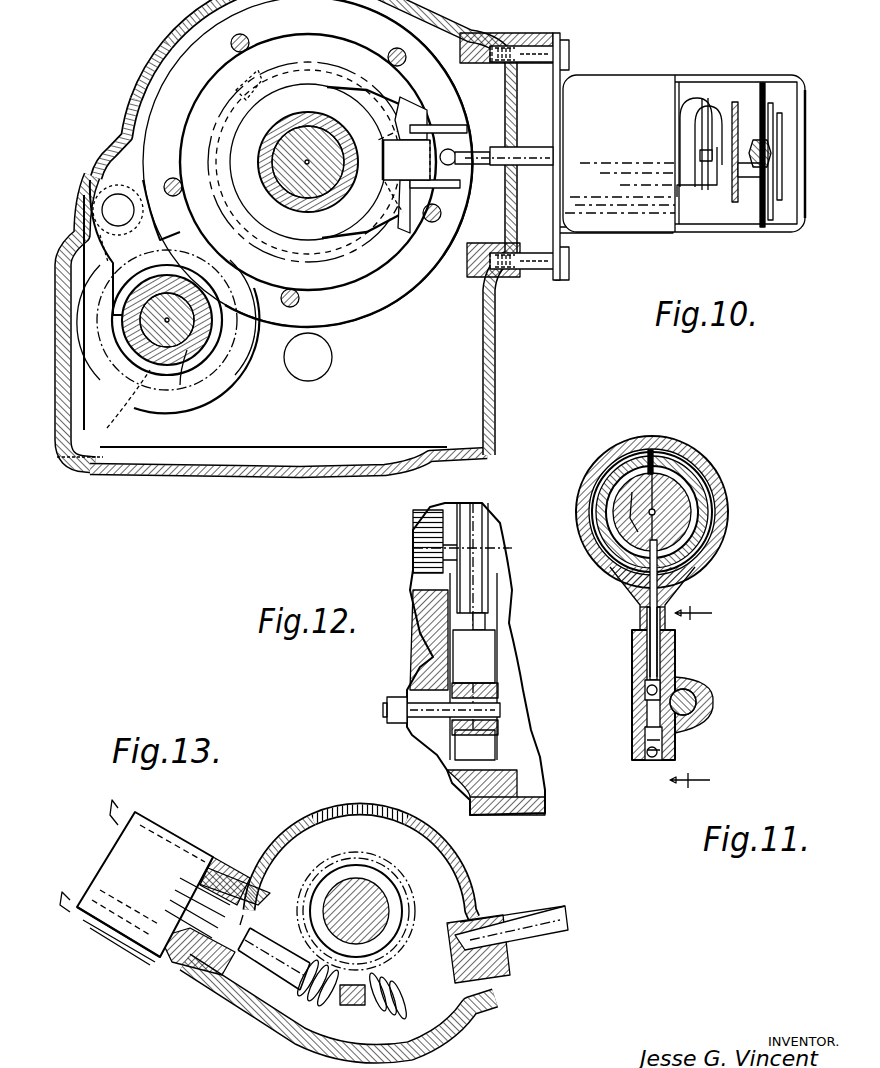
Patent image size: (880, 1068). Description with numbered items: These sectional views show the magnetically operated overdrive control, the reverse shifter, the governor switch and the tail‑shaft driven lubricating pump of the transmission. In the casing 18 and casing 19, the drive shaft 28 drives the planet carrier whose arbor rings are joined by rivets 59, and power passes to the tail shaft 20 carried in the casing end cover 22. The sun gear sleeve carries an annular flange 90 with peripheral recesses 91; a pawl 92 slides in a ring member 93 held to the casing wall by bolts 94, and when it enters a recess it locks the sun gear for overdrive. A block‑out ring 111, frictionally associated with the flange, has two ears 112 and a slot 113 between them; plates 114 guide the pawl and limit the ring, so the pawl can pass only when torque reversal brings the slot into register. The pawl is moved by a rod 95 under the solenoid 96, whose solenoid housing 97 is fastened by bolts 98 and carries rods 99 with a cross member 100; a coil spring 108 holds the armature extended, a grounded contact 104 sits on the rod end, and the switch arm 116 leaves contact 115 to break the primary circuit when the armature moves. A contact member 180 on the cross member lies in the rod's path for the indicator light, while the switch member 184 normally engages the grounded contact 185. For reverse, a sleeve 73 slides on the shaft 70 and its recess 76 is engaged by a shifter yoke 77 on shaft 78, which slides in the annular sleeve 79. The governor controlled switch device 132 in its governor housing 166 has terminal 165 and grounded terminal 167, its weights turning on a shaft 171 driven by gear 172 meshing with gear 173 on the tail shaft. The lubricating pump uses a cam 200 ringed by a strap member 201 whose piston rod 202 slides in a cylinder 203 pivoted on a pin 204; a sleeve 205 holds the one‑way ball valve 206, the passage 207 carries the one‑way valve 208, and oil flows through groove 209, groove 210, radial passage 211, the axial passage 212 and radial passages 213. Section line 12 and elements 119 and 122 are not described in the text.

In FIG. 10, the casing 18 is at (492, 320).
In FIG. 10, the casing 19 is at (140, 74).
In FIG. 12, the tail shaft 20 is at (495, 530).
In FIG. 11, the tail shaft 20 is at (688, 517).
In FIG. 13, the tail shaft 20 is at (350, 890).
In FIG. 12, the casing end cover 22 is at (410, 645).
In FIG. 13, the casing end cover 22 is at (448, 862).
In FIG. 10, the drive shaft 28 is at (302, 126).
In FIG. 10, the rivets 59 is at (312, 112).
In FIG. 10, the shaft 70 is at (184, 395).
In FIG. 10, the sleeve 73 is at (190, 338).
In FIG. 10, the recess 76 is at (150, 385).
In FIG. 10, the shifter yoke 77 is at (57, 255).
In FIG. 10, the shaft 78 is at (86, 192).
In FIG. 10, the annular sleeve 79 is at (118, 194).
In FIG. 10, the annular flange 90 is at (330, 260).
In FIG. 10, the peripheral recesses 91 is at (412, 118).
In FIG. 10, the pawl 92 is at (395, 162).
In FIG. 10, the ring member 93 is at (428, 278).
In FIG. 10, the bolts 94 is at (297, 302).
In FIG. 10, the rod 95 is at (483, 165).
In FIG. 10, the solenoid 96 is at (608, 238).
In FIG. 10, the solenoid housing 97 is at (645, 236).
In FIG. 10, the bolts 98 is at (545, 32).
In FIG. 10, the rods 99 is at (725, 78).
In FIG. 10, the cross member 100 is at (768, 80).
In FIG. 10, the contact 104 is at (755, 135).
In FIG. 10, the coil spring 108 is at (704, 118).
In FIG. 10, the block-out ring 111 is at (330, 72).
In FIG. 10, the ears 112 is at (412, 104).
In FIG. 10, the slot 113 is at (398, 192).
In FIG. 10, the plates 114 is at (462, 134).
In FIG. 10, the contact 115 is at (717, 187).
In FIG. 10, the switch arm 116 is at (700, 154).
In FIG. 10, the arm 119 is at (448, 188).
In FIG. 13, the housing wall 122 is at (282, 838).
In FIG. 13, the governor controlled switch device 132 is at (190, 838).
In FIG. 13, the terminal 165 is at (112, 818).
In FIG. 13, the governor housing 166 is at (130, 940).
In FIG. 13, the grounded terminal 167 is at (70, 895).
In FIG. 13, the shaft 171 is at (268, 940).
In FIG. 13, the gear 172 is at (295, 990).
In FIG. 12, the gear 173 is at (418, 540).
In FIG. 13, the gear 173 is at (408, 905).
In FIG. 10, the contact member 180 is at (778, 170).
In FIG. 10, the switch member 184 is at (780, 132).
In FIG. 10, the contact 185 is at (766, 120).
In FIG. 11, the cam 200 is at (708, 527).
In FIG. 12, the strap member 201 is at (488, 578).
In FIG. 11, the strap member 201 is at (724, 548).
In FIG. 12, the piston rod 202 is at (486, 620).
In FIG. 11, the piston rod 202 is at (632, 620).
In FIG. 12, the cylinder 203 is at (496, 658).
In FIG. 11, the cylinder 203 is at (676, 663).
In FIG. 12, the pin 204 is at (418, 727).
In FIG. 11, the pin 204 is at (700, 690).
In FIG. 11, the sleeve 205 is at (646, 742).
In FIG. 11, the one-way ball valve 206 is at (663, 744).
In FIG. 11, the passage 207 is at (670, 640).
In FIG. 11, the one-way valve 208 is at (645, 692).
In FIG. 11, the groove 209 is at (715, 490).
In FIG. 11, the groove 210 is at (660, 508).
In FIG. 11, the radial passage 211 is at (653, 445).
In FIG. 11, the axial passage 212 is at (690, 482).
In FIG. 11, the radial passages 213 is at (620, 492).
In FIG. 11, the section line 12 is at (691, 695).